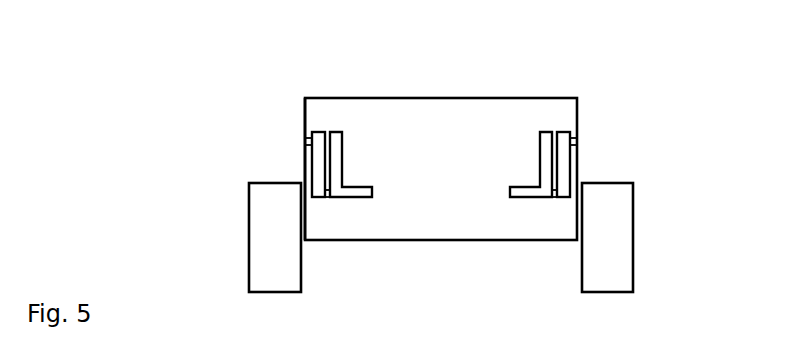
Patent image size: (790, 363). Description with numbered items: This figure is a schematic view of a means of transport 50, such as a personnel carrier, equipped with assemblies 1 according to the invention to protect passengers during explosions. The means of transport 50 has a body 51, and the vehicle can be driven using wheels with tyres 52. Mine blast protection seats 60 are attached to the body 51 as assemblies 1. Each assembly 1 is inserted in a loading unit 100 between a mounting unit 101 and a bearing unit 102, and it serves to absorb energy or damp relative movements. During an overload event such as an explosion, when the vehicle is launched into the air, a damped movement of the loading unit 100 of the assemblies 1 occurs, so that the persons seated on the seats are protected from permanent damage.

The means of transport 50 is at (613, 73).
The body 51 is at (303, 98).
The wheels with tyres 52 is at (265, 232).
The mine blast protection seat 60 is at (303, 167).
The assembly 1 is at (528, 161).
The loading unit 100 is at (500, 210).
The mounting unit 101 is at (510, 192).
The bearing unit 102 is at (562, 132).